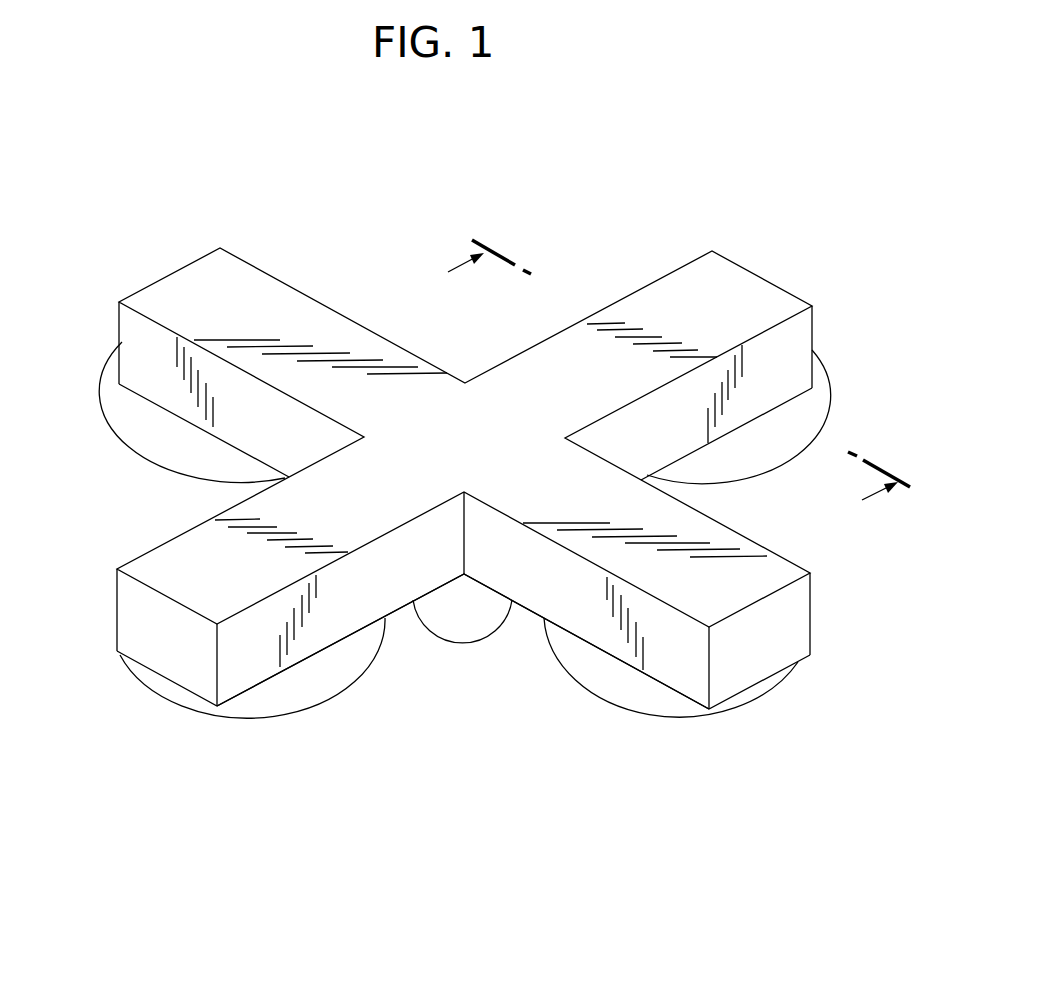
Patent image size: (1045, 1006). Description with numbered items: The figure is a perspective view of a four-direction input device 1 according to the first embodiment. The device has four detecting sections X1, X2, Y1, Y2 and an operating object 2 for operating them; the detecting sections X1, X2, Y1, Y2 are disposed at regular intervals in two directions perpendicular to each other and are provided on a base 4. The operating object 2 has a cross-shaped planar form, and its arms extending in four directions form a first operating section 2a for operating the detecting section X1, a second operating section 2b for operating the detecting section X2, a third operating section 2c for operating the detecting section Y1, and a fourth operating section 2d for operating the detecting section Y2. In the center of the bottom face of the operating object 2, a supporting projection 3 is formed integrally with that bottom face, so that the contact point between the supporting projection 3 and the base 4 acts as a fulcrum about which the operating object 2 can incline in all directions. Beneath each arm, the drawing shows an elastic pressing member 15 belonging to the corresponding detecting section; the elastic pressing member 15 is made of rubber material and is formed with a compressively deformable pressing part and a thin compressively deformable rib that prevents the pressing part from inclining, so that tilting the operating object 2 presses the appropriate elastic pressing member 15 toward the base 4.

The four-direction input device 1 is at (553, 186).
The operating object 2 is at (615, 291).
The first operating section 2a is at (721, 292).
The second operating section 2b is at (177, 588).
The third operating section 2c is at (243, 292).
The fourth operating section 2d is at (778, 578).
The supporting projection 3 is at (463, 627).
The base 4 is at (482, 754).
The elastic pressing member 15 is at (198, 465).
The detecting section X1 is at (833, 420).
The detecting section X2 is at (278, 726).
The detecting section Y1 is at (113, 447).
The detecting section Y2 is at (665, 729).